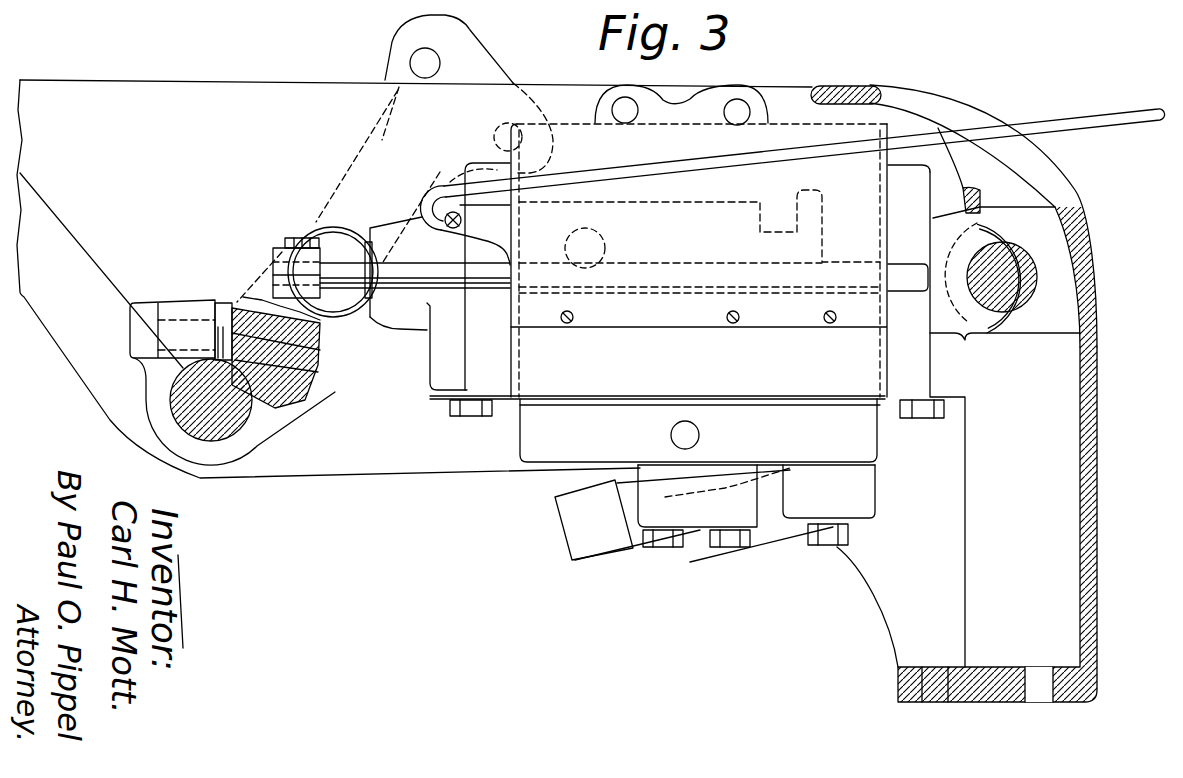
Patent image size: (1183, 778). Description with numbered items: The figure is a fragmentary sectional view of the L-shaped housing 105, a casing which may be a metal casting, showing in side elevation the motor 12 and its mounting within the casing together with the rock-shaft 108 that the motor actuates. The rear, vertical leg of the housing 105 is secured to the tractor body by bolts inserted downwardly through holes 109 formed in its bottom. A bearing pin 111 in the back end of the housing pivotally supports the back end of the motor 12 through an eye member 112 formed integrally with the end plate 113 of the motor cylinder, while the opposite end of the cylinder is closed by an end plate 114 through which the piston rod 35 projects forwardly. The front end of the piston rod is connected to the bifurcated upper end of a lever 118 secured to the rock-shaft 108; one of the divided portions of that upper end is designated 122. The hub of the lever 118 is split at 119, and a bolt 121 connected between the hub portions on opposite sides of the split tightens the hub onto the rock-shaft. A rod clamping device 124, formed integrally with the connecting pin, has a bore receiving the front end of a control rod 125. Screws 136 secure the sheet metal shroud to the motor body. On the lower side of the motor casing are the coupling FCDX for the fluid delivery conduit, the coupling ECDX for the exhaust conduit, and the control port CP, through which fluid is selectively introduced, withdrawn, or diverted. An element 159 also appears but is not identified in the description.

The L-shaped housing 105 is at (933, 103).
The operating lever 159 is at (1073, 117).
The end plate 113 is at (903, 178).
The eye member 112 is at (943, 227).
The bearing pin 111 is at (1030, 280).
The rod clamping device 124 is at (322, 248).
The piston rod 35 is at (360, 238).
The divided portion of lever upper end 122 is at (256, 262).
The lever 118 is at (243, 297).
The split 119 is at (220, 307).
The bolt 121 is at (143, 305).
The control rod 125 is at (440, 268).
The end plate 114 is at (433, 330).
The screws 136 is at (567, 323).
The motor 12 is at (432, 398).
The rock-shaft 108 is at (210, 443).
The holes 109 is at (1027, 697).
The control port CP is at (671, 436).
The coupling ECDX is at (642, 520).
The coupling FCDX is at (773, 525).